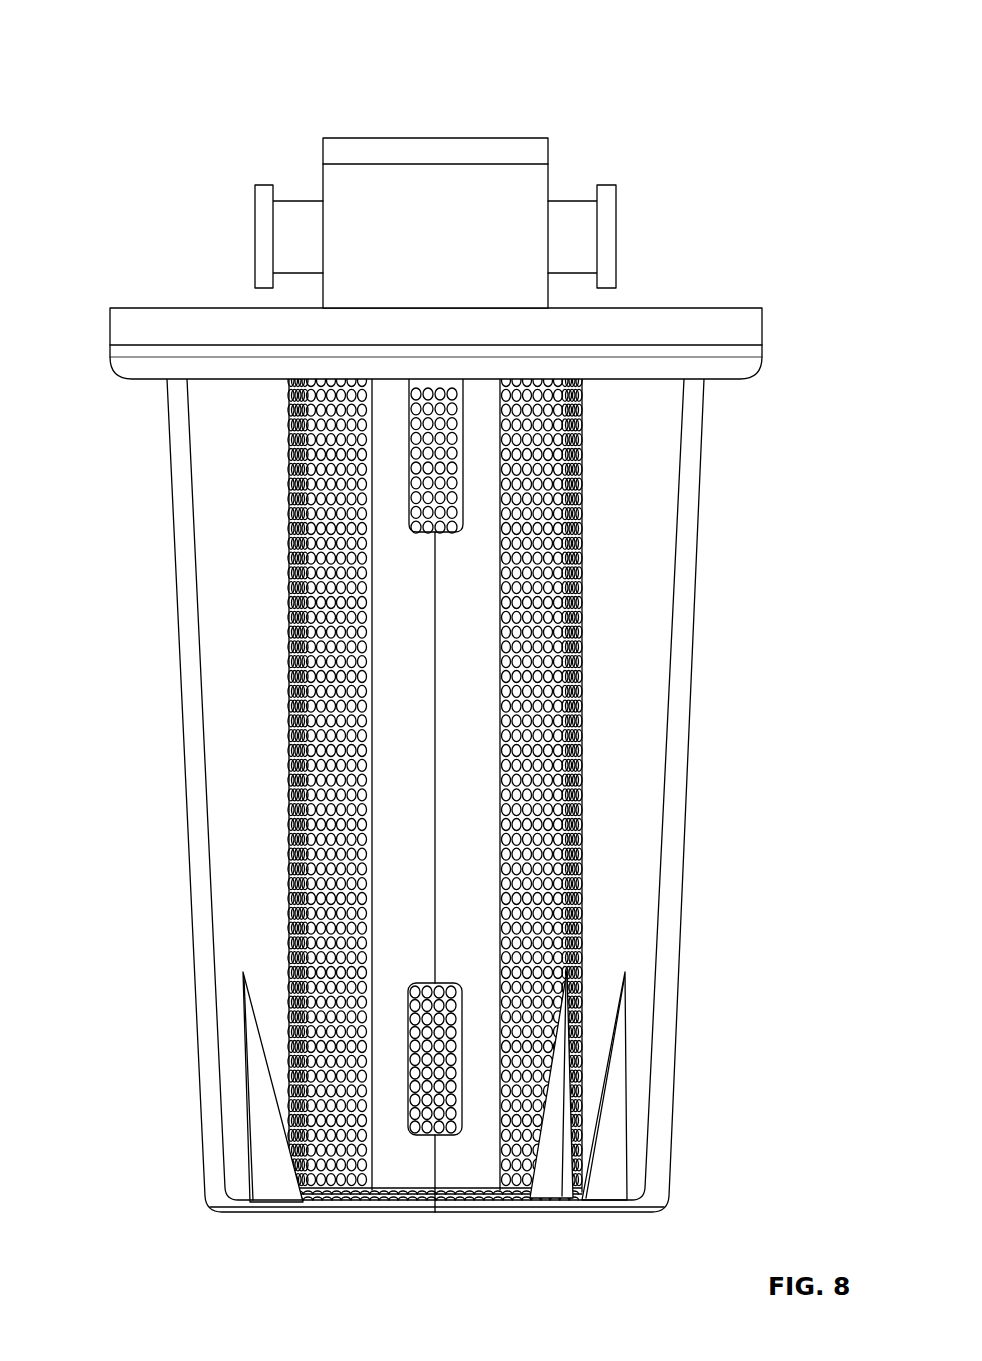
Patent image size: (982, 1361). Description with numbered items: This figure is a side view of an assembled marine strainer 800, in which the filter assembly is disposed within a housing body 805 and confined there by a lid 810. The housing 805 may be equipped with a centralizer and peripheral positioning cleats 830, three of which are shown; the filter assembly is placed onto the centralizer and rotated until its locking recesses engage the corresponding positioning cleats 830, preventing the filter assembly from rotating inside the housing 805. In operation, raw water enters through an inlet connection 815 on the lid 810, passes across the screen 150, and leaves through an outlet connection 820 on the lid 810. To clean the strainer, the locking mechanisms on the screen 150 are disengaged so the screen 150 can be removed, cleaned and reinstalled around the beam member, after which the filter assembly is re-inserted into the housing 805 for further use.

The assembled marine strainer 800 is at (414, 619).
The housing body 805 is at (186, 812).
The lid 810 is at (109, 326).
The inlet connection 815 is at (254, 238).
The outlet connection 820 is at (617, 238).
The screen 150 is at (289, 563).
The positioning cleats 830 is at (257, 1108).